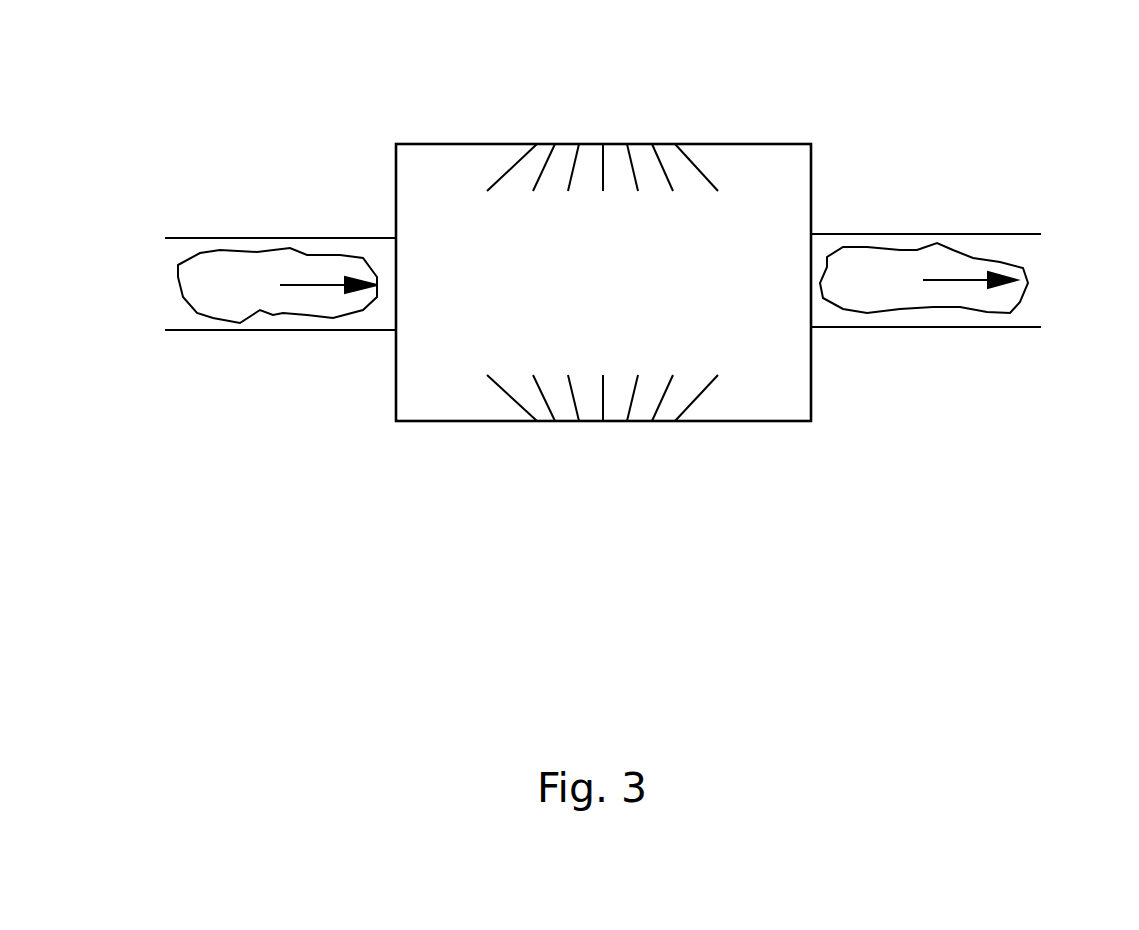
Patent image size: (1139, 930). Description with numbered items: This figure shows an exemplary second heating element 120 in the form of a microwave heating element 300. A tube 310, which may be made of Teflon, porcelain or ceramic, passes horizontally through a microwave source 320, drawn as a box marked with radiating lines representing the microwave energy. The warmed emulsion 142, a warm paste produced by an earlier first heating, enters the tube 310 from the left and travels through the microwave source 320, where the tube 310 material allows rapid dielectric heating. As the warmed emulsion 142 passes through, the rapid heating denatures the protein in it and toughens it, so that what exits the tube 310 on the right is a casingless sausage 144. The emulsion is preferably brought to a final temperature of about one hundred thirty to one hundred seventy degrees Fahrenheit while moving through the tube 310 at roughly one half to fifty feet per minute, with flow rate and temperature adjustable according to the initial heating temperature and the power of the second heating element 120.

The second heating element 120 is at (264, 592).
The warmed emulsion 142 is at (213, 295).
The casingless sausage 144 is at (908, 250).
The microwave heating element 300 is at (702, 432).
The tube 310 is at (1013, 327).
The microwave source 320 is at (602, 133).